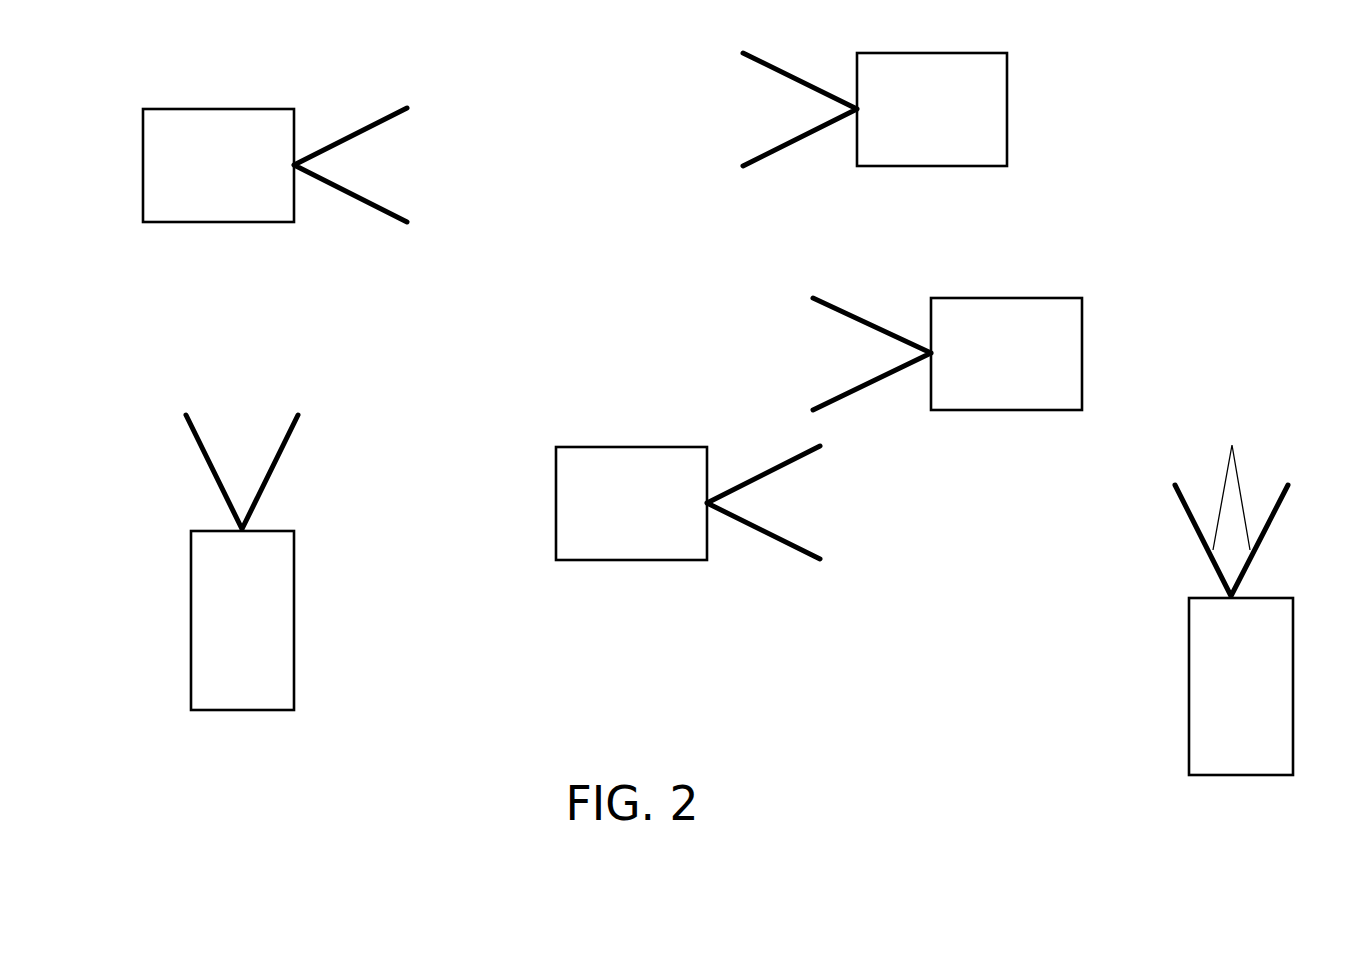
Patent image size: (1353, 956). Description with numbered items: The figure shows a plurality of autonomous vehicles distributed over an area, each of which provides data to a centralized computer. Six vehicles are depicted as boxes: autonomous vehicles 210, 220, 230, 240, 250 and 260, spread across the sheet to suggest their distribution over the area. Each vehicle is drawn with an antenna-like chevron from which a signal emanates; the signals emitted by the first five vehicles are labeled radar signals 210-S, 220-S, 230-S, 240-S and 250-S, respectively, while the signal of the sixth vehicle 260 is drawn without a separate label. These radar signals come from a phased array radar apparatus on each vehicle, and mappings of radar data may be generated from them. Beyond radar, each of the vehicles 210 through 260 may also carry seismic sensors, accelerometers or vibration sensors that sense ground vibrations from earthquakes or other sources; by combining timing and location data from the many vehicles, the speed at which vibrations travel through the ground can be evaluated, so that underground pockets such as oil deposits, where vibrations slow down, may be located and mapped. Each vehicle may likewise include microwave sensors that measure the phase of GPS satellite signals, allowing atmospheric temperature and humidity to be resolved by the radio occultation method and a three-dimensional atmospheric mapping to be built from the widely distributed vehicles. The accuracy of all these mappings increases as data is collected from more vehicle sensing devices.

The autonomous vehicle 210 is at (218, 165).
The radar signal 210-S is at (340, 183).
The autonomous vehicle 220 is at (932, 109).
The radar signal 220-S is at (812, 127).
The autonomous vehicle 230 is at (1006, 354).
The radar signal 230-S is at (880, 371).
The autonomous vehicle 240 is at (631, 503).
The radar signal 240-S is at (752, 521).
The autonomous vehicle 250 is at (242, 620).
The radar signal 250-S is at (260, 480).
The autonomous vehicle 260 is at (1234, 610).